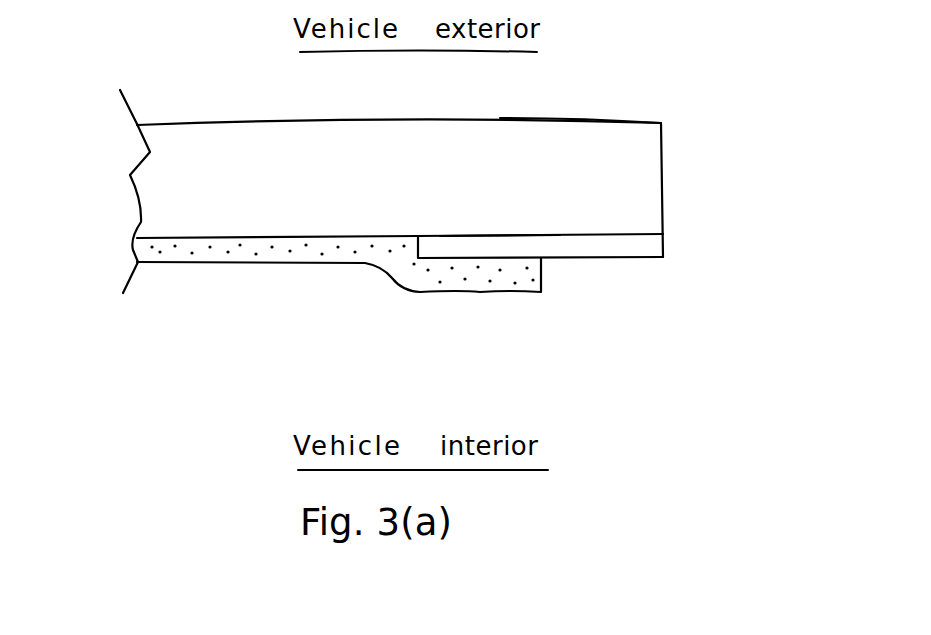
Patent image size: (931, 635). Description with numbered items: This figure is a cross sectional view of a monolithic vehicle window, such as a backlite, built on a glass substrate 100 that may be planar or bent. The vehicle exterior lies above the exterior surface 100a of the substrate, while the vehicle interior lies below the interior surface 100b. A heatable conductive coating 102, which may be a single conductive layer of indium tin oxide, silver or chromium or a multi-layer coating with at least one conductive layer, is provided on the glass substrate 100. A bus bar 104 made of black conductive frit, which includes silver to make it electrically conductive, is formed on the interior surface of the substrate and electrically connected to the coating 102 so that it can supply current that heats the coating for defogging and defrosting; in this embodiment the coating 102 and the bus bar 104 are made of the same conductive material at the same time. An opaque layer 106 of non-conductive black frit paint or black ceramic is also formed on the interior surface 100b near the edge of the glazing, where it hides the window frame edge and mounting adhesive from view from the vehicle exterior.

The glass substrate 100 is at (645, 183).
The exterior surface of the glass substrate 100a is at (663, 150).
The interior surface of the glass substrate 100b is at (520, 234).
The heatable conductive coating 102 is at (215, 248).
The bus bar 104 is at (448, 278).
The opaque layer 106 is at (645, 245).